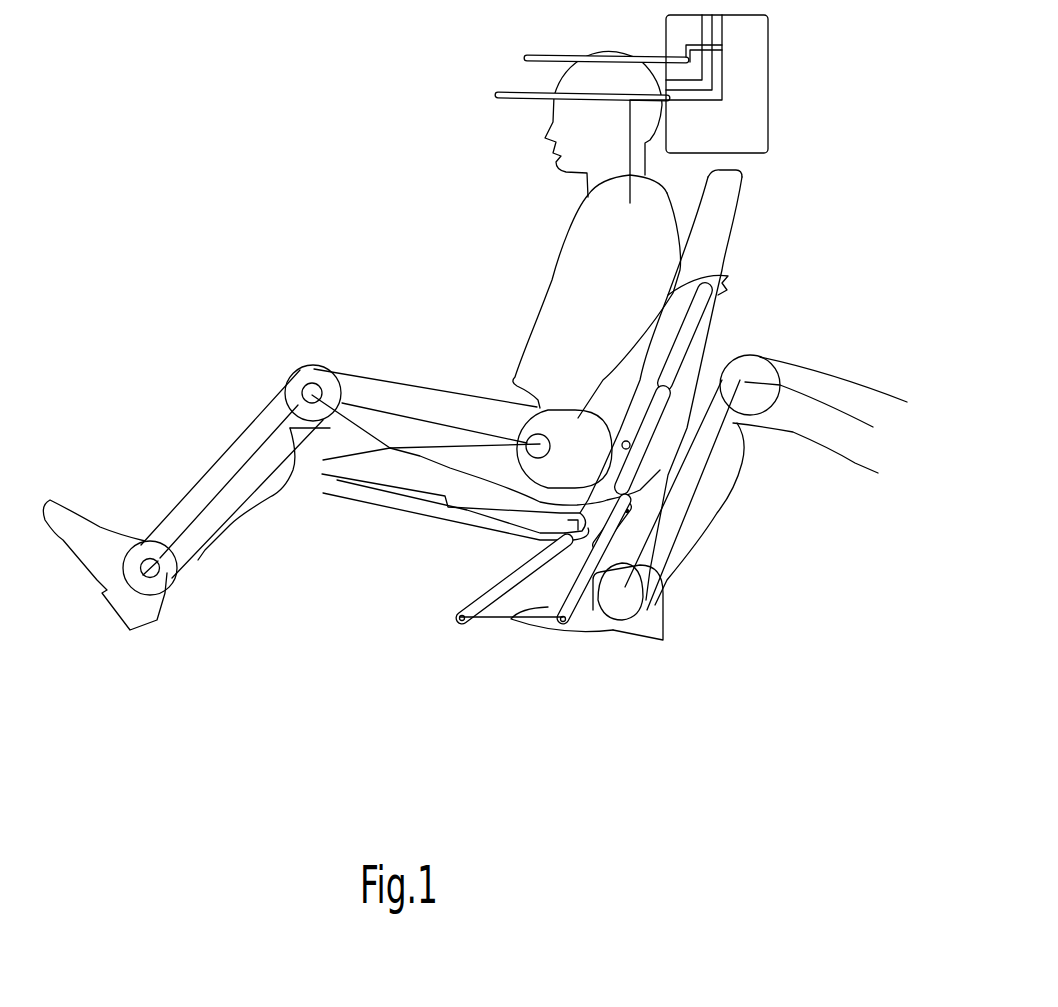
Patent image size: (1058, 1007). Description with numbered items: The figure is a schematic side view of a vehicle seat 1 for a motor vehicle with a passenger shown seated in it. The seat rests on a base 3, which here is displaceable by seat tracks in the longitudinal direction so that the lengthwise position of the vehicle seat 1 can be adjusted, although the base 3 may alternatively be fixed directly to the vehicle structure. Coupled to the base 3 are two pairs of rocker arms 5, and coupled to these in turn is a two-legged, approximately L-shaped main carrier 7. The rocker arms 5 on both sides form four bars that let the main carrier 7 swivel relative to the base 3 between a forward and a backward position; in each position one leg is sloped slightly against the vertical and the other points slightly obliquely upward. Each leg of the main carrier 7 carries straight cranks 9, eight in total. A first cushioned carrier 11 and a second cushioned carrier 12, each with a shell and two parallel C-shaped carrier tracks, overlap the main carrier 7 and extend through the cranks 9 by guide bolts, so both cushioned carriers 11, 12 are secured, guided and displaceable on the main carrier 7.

The vehicle seat 1 is at (287, 155).
The base 3 is at (510, 620).
The rocker arms 5 is at (480, 607).
The main carrier 7 is at (633, 520).
The cranks 9 is at (323, 490).
The first cushioned carrier 11 is at (343, 447).
The second cushioned carrier 12 is at (657, 323).